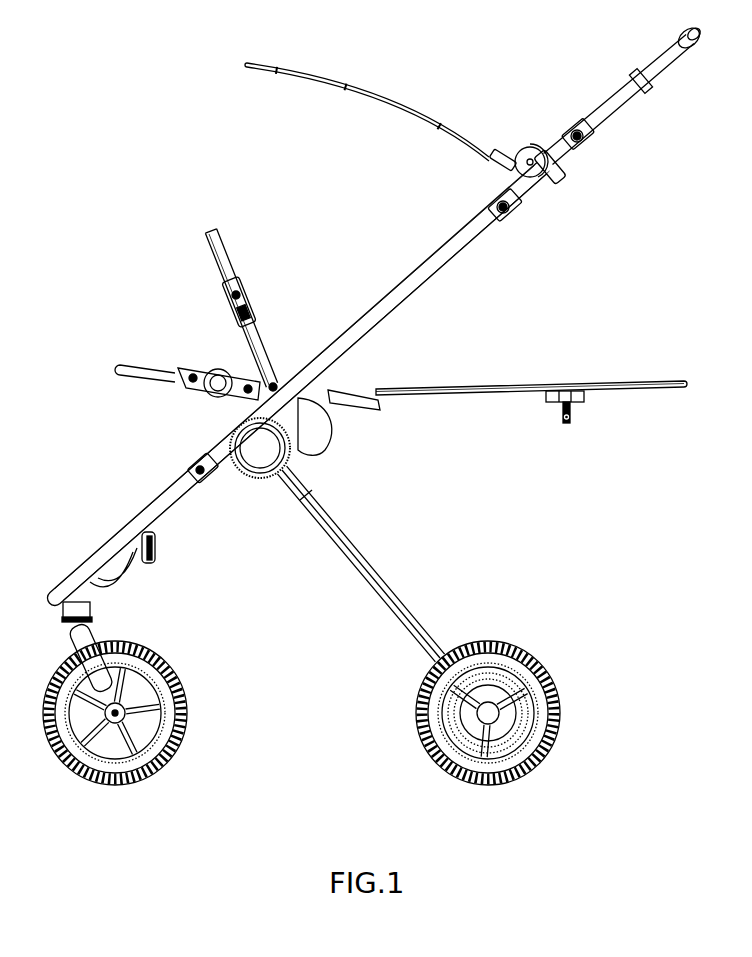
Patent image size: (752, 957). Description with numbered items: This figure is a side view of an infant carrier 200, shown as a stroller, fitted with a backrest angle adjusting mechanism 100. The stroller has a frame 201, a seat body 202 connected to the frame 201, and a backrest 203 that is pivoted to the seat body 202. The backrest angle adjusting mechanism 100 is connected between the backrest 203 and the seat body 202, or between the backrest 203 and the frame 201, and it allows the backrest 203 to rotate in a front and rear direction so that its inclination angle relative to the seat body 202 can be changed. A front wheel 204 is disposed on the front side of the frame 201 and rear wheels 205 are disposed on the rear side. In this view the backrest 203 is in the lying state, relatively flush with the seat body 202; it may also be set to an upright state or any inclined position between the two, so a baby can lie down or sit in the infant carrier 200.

The infant carrier 200 is at (97, 22).
The frame 201 is at (425, 273).
The seat body 202 is at (353, 413).
The backrest 203 is at (454, 395).
The backrest angle adjusting mechanism 100 is at (572, 408).
The front wheel 204 is at (182, 733).
The rear wheels 205 is at (556, 742).